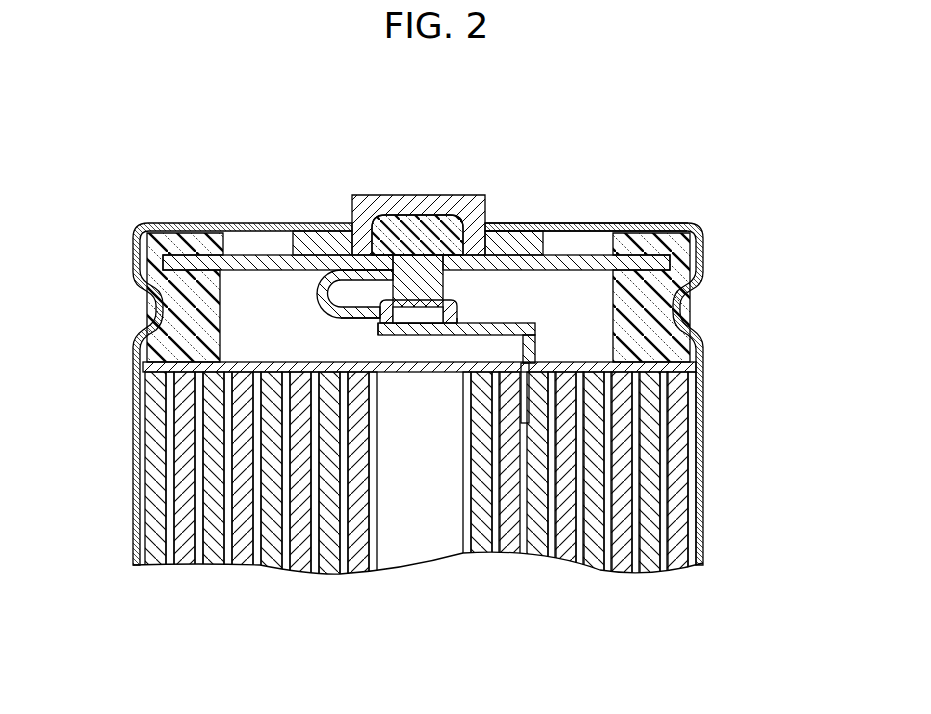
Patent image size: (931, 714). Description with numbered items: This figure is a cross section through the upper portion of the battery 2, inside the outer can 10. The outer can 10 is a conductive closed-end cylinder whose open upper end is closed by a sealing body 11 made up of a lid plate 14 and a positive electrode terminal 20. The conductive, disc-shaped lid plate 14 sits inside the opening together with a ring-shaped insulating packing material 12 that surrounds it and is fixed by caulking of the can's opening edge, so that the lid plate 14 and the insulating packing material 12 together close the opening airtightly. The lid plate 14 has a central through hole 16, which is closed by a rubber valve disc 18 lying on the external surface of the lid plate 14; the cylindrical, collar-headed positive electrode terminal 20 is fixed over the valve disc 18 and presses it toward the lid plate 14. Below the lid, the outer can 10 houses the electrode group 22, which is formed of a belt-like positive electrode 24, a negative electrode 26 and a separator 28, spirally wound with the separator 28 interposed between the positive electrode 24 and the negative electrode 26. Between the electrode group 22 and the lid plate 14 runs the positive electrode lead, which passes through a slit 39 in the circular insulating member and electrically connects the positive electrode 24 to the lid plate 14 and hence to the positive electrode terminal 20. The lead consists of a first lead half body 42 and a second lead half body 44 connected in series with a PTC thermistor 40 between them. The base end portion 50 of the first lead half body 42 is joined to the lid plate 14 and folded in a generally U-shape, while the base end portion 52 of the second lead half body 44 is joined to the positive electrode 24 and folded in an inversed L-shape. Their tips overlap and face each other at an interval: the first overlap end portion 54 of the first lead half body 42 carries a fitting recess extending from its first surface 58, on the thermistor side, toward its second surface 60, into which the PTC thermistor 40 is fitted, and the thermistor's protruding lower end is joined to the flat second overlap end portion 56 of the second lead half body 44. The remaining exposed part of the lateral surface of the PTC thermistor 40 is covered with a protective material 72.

The battery 2 is at (722, 188).
The outer can 10 is at (706, 383).
The sealing body 11 is at (534, 236).
The insulating packing material 12 is at (163, 290).
The lid plate 14 is at (243, 262).
The central through hole 16 is at (440, 247).
The valve disc 18 is at (422, 262).
The positive electrode terminal 20 is at (470, 223).
The electrode group 22 is at (443, 521).
The positive electrode 24 is at (652, 528).
The negative electrode 26 is at (642, 491).
The separator 28 is at (690, 451).
The slit 39 is at (548, 360).
The PTC thermistor 40 is at (402, 285).
The first lead half body 42 is at (330, 298).
The second lead half body 44 is at (545, 347).
The base end portion 50 is at (322, 290).
The base end portion 52 is at (696, 412).
The first overlap end portion 54 is at (435, 303).
The second overlap end portion 56 is at (432, 332).
The first surface 58 is at (358, 320).
The second surface 60 is at (400, 262).
The protective material 72 is at (378, 328).